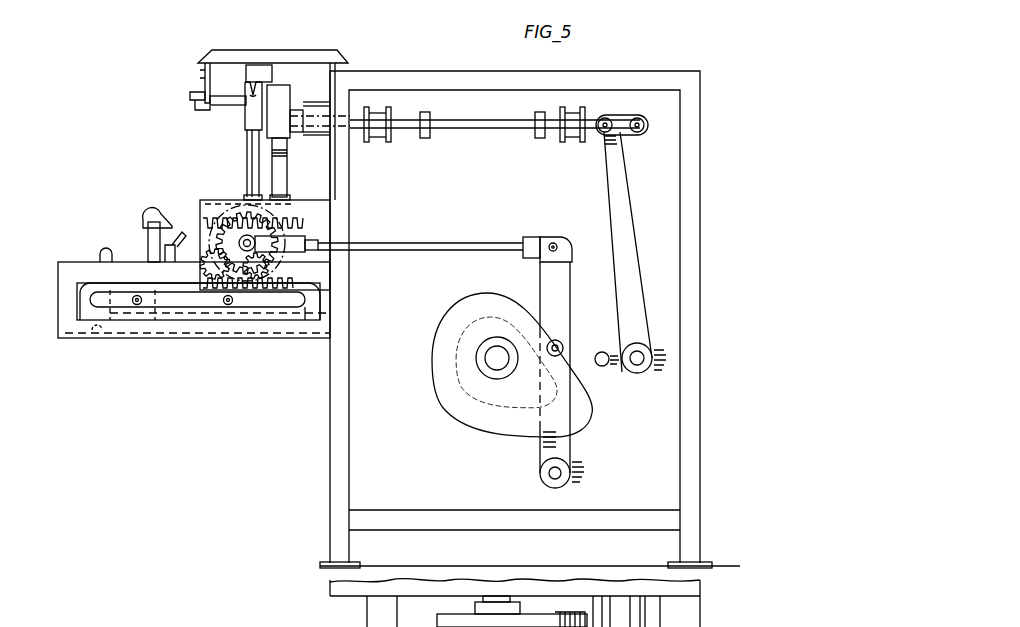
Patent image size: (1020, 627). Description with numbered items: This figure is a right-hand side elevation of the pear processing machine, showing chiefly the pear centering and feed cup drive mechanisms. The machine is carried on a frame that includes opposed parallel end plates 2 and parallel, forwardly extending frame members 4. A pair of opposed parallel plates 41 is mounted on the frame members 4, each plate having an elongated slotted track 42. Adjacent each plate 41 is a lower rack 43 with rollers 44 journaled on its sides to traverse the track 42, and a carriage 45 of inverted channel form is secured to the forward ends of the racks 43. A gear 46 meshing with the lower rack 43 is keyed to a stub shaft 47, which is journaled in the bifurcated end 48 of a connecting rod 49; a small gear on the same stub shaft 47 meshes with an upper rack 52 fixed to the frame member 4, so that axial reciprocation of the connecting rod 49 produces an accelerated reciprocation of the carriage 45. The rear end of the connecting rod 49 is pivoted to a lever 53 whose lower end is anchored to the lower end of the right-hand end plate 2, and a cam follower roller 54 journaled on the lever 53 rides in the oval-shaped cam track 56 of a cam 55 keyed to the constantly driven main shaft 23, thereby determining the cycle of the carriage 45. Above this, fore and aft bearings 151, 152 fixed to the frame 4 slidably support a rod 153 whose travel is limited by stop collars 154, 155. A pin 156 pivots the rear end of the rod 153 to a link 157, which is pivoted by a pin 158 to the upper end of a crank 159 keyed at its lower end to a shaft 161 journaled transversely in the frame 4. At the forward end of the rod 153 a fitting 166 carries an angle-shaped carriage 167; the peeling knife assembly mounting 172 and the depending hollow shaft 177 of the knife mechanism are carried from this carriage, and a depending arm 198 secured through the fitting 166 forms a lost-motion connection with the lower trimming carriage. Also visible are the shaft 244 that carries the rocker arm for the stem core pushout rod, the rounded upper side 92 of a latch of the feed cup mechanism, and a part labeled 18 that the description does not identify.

The end plates 2 is at (367, 485).
The frame members 4 is at (57, 319).
The table support 18 is at (550, 610).
The main shaft 23 is at (494, 361).
The plates 41 is at (307, 288).
The slotted tracks 42 is at (306, 313).
The lower rack 43 is at (280, 316).
The rollers 44 is at (229, 305).
The carriage 45 is at (160, 306).
The gear 46 is at (215, 267).
The stub shaft 47 is at (243, 240).
The bifurcated end 48 is at (297, 242).
The connecting rod 49 is at (392, 251).
The upper rack 52 is at (292, 214).
The lever 53 is at (571, 278).
The cam follower roller 54 is at (562, 354).
The cam 55 is at (586, 423).
The cam track 56 is at (517, 430).
The rounded upper side 92 is at (150, 214).
The fore bearing 151 is at (378, 142).
The aft bearing 152 is at (583, 142).
The rod 153 is at (466, 120).
The stop collar 154 is at (426, 138).
The stop collar 155 is at (538, 138).
The pin 156 is at (640, 118).
The link 157 is at (614, 118).
The pin 158 is at (602, 119).
The crank 159 is at (634, 252).
The shaft 161 is at (640, 373).
The fitting 166 is at (289, 103).
The carriage 167 is at (273, 77).
The peeling knife assembly mounting 172 is at (245, 174).
The hollow shaft 177 is at (246, 145).
The depending arm 198 is at (283, 172).
The shaft 244 is at (603, 366).